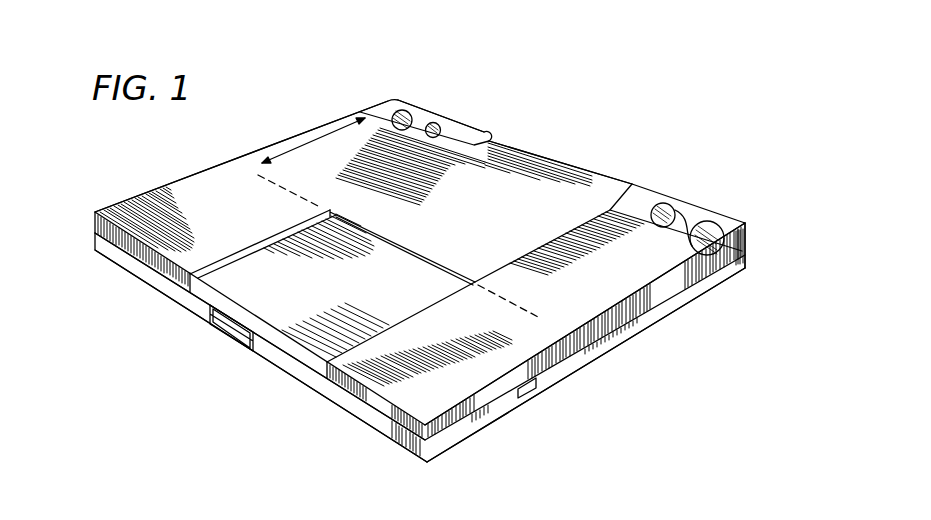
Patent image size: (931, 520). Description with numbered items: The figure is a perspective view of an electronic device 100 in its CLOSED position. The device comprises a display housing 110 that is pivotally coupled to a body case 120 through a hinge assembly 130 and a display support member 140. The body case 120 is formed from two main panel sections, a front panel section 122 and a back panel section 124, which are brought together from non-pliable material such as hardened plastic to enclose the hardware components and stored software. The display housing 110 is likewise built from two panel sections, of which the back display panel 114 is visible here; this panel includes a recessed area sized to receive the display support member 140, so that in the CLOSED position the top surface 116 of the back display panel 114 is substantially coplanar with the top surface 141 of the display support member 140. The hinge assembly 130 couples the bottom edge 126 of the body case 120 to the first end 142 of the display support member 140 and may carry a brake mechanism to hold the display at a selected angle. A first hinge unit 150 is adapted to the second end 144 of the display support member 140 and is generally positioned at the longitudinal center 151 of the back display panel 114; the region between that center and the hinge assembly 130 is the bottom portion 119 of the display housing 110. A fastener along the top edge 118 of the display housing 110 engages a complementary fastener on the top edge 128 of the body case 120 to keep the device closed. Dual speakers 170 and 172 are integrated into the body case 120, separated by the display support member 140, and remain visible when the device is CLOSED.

The electronic device 100 is at (630, 80).
The display housing 110 is at (271, 130).
The back display panel 114 is at (206, 214).
The top surface of back display panel 116 is at (627, 282).
The top edge of display housing 118 is at (138, 247).
The bottom portion of display housing 119 is at (303, 135).
The body case 120 is at (145, 285).
The front panel section 122 is at (497, 399).
The back panel section 124 is at (463, 440).
The bottom edge of body case 126 is at (750, 247).
The top edge of body case 128 is at (343, 412).
The hinge assembly 130 is at (533, 125).
The display support member 140 is at (598, 208).
The top surface of display support member 141 is at (428, 192).
The first end of display support member 142 is at (574, 170).
The second end of display support member 144 is at (396, 228).
The first hinge unit 150 is at (423, 258).
The longitudinal center of back display panel 151 is at (278, 188).
The speaker 170 is at (418, 127).
The speaker 172 is at (688, 220).